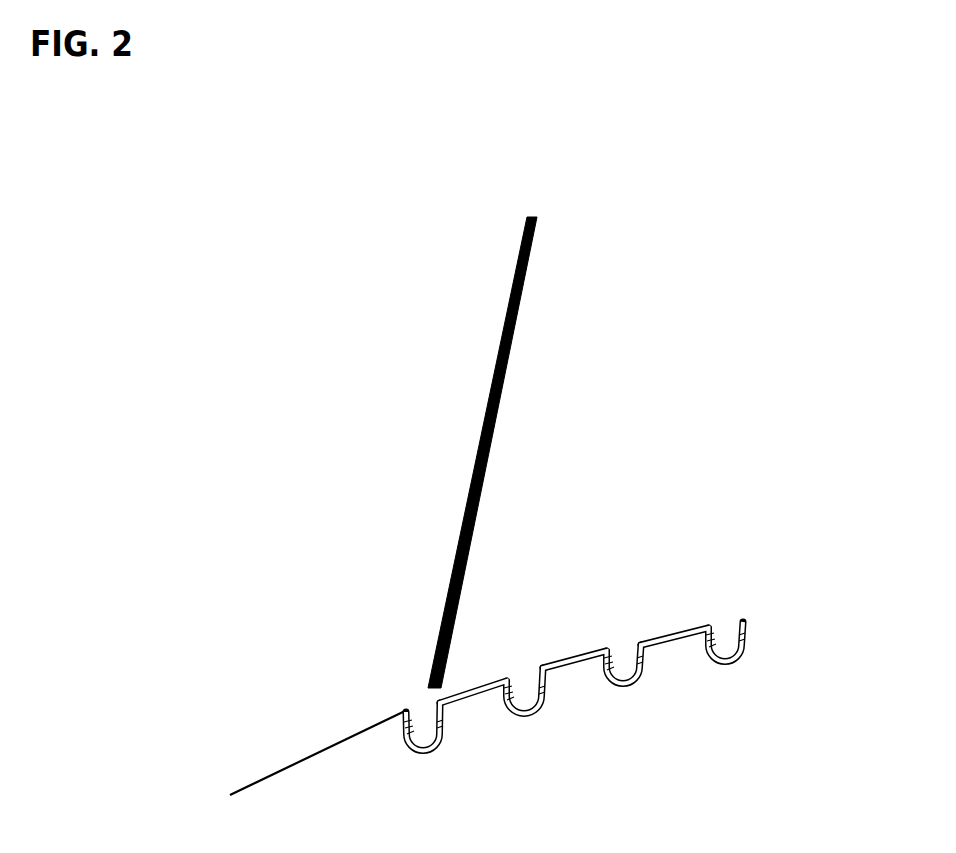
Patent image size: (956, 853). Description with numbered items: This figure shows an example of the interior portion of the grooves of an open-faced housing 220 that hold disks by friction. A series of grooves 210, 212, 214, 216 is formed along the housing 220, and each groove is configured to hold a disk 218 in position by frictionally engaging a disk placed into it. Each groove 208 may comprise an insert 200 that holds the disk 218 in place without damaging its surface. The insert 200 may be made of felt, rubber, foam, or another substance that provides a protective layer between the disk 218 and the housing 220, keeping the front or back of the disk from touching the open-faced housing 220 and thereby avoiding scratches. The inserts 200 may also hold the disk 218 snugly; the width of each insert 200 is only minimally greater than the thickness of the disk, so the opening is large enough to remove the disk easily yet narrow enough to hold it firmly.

The insert 200 is at (440, 733).
The groove 208 is at (400, 728).
The groove 210 is at (422, 716).
The groove 212 is at (520, 672).
The groove 214 is at (625, 645).
The groove 216 is at (724, 625).
The disk 218 is at (503, 383).
The open-faced housing 220 is at (278, 768).